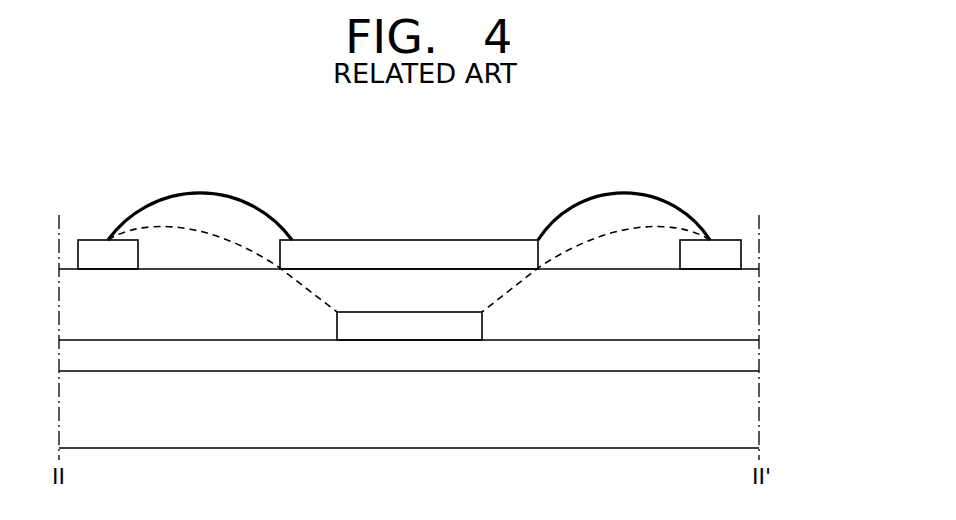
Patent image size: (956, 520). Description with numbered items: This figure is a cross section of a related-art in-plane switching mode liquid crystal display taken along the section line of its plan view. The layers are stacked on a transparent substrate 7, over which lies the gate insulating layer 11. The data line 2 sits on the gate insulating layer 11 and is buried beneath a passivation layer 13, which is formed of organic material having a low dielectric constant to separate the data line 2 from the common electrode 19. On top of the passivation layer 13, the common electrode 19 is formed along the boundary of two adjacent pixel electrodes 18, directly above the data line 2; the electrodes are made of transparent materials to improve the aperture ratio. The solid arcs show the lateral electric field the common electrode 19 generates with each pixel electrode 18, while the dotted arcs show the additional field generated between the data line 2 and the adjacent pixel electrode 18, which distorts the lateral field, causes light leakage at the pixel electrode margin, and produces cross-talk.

The data line 2 is at (407, 327).
The transparent substrate 7 is at (750, 418).
The gate insulating layer 11 is at (750, 357).
The passivation layer 13 is at (750, 303).
The pixel electrode 18 is at (97, 244).
The common electrode 19 is at (418, 245).